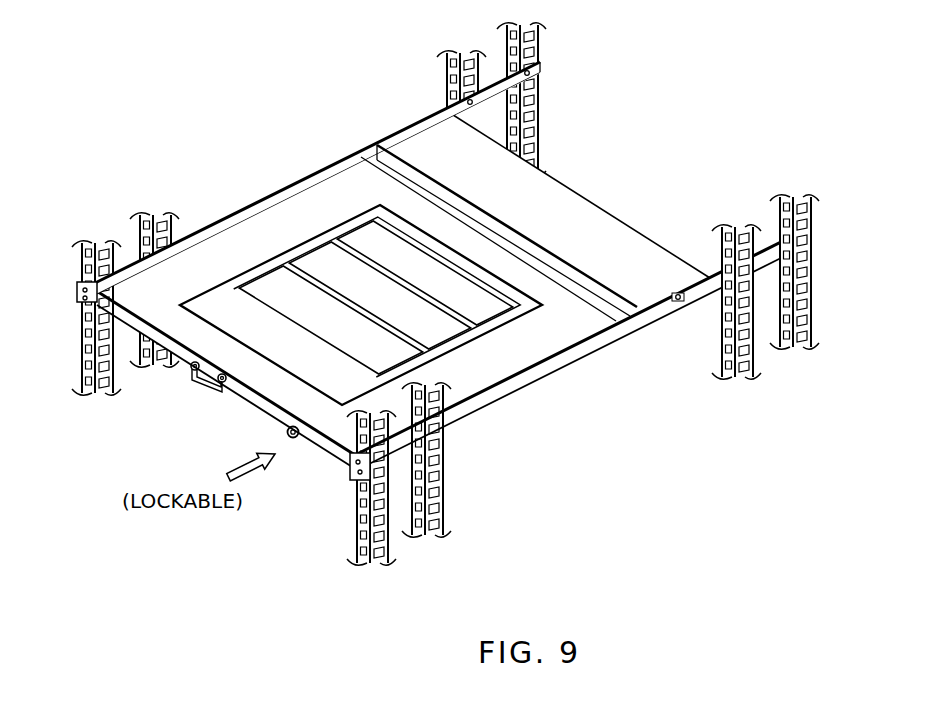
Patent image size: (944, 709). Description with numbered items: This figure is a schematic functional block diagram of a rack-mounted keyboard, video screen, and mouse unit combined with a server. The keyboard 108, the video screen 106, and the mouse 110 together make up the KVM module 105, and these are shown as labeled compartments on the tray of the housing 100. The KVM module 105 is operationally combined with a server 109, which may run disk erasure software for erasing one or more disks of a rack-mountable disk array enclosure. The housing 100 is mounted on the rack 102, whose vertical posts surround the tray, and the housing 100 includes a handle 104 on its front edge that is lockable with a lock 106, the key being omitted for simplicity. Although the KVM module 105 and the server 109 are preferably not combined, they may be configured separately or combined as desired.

The housing 100 is at (106, 163).
The rack 102 is at (537, 48).
The handle 104 is at (196, 389).
The KVM module 105 is at (483, 330).
The video screen 106 is at (296, 437).
The keyboard 108 is at (300, 252).
The server 109 is at (197, 319).
The mouse 110 is at (262, 264).